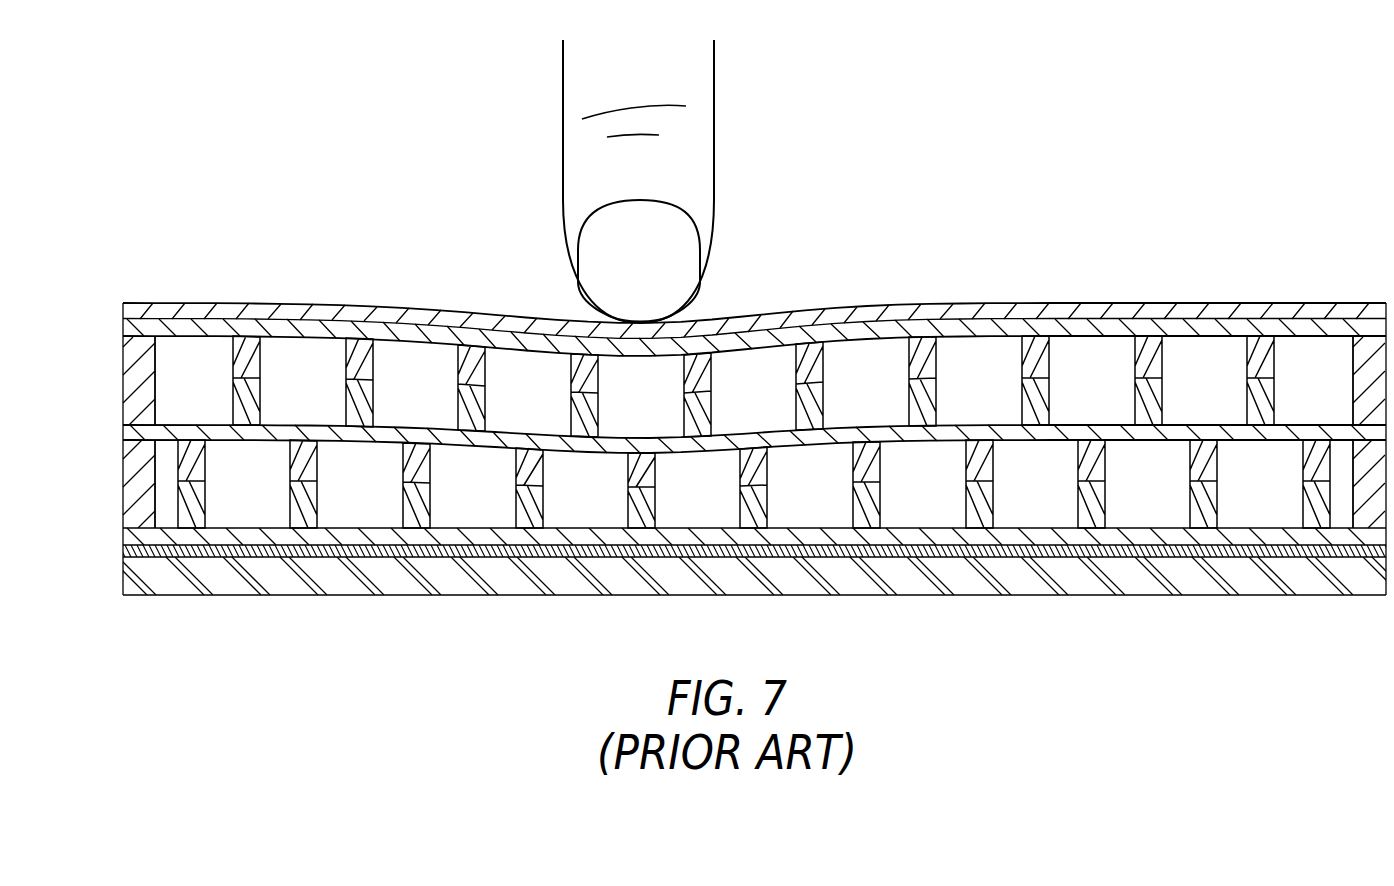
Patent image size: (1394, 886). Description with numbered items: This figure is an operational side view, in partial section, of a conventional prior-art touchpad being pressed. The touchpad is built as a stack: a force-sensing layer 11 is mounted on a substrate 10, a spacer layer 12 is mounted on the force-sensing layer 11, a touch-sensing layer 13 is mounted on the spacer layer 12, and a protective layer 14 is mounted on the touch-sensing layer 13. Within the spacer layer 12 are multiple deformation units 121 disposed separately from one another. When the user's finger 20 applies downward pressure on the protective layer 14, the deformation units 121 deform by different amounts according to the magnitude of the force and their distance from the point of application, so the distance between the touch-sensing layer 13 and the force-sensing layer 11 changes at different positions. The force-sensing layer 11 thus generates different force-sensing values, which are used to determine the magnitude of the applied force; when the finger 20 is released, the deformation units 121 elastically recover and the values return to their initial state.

The substrate 10 is at (288, 596).
The force-sensing layer 11 is at (123, 533).
The spacer layer 12 is at (107, 409).
The deformation unit 121 is at (358, 350).
The touch-sensing layer 13 is at (123, 323).
The protective layer 14 is at (877, 313).
The finger 20 is at (706, 83).